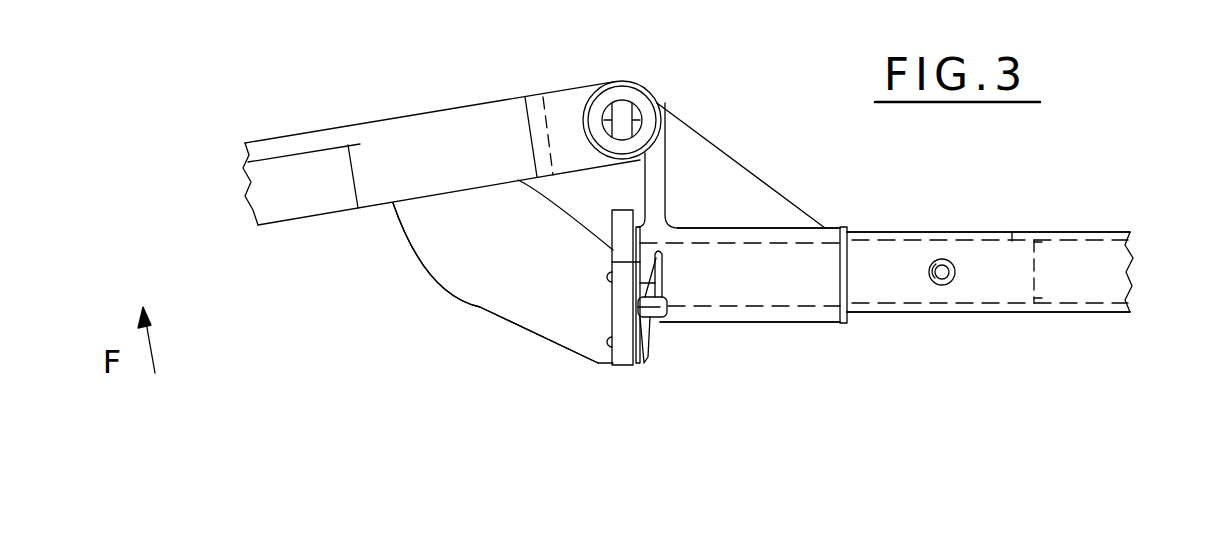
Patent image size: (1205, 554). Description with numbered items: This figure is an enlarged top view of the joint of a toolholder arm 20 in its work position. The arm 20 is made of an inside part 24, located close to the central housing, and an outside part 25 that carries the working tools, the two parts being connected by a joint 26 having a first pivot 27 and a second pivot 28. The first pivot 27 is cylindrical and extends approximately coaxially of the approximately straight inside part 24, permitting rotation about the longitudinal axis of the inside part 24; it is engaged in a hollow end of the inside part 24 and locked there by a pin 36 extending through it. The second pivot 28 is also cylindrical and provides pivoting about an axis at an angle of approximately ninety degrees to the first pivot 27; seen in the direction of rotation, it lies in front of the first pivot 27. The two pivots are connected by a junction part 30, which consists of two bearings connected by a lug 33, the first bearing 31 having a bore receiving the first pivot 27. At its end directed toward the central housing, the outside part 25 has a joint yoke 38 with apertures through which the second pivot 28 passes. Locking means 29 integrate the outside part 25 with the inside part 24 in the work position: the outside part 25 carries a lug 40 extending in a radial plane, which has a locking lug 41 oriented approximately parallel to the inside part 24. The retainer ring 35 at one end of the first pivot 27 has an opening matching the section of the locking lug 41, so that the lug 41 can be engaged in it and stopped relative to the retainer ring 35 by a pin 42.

The toolholder arm 20 is at (1104, 226).
The inside part 24 is at (1073, 293).
The outside part 25 is at (308, 140).
The joint 26 is at (745, 150).
The first pivot 27 is at (1012, 232).
The second pivot 28 is at (628, 98).
The locking means 29 is at (536, 340).
The junction part 30 is at (688, 150).
The first bearing 31 is at (788, 293).
The lug 33 is at (753, 192).
The retainer ring 35 is at (628, 355).
The pin 36 is at (947, 263).
The joint yoke 38 is at (567, 107).
The lug 40 is at (490, 263).
The locking lug 41 is at (657, 323).
The pin 42 is at (647, 355).